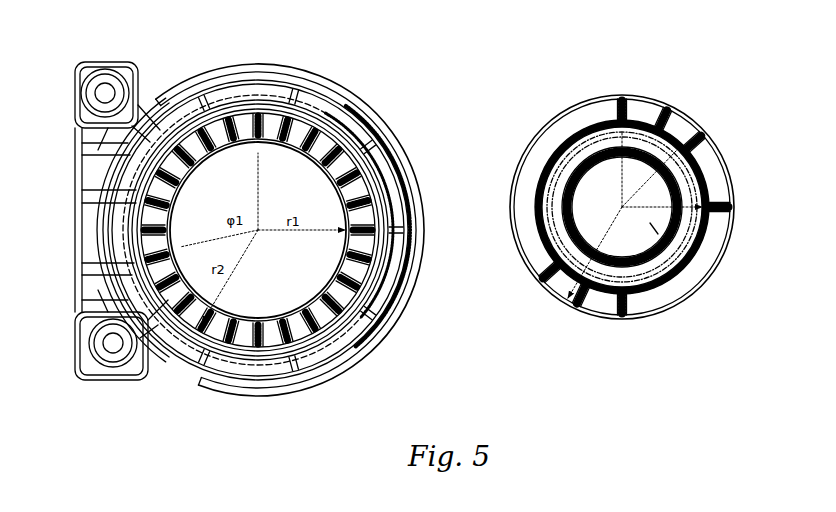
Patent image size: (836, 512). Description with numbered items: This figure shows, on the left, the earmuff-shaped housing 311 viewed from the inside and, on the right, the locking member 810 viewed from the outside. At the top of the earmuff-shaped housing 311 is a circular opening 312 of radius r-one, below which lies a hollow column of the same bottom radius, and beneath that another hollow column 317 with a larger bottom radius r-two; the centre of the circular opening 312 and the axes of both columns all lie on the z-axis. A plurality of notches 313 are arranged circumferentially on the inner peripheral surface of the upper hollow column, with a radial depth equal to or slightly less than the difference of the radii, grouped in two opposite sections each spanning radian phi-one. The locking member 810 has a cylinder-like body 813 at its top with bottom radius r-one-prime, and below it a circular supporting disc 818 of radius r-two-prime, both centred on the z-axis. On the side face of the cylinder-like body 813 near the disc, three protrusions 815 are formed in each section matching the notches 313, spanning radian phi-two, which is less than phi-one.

The earmuff-shaped housing 311 is at (290, 210).
The circular opening 312 is at (290, 219).
The notches 313 is at (292, 230).
The hollow column 317 is at (298, 230).
The locking member 810 is at (647, 177).
The cylinder-like body 813 is at (671, 207).
The protrusion 815 is at (656, 204).
The circular supporting disc 818 is at (674, 207).